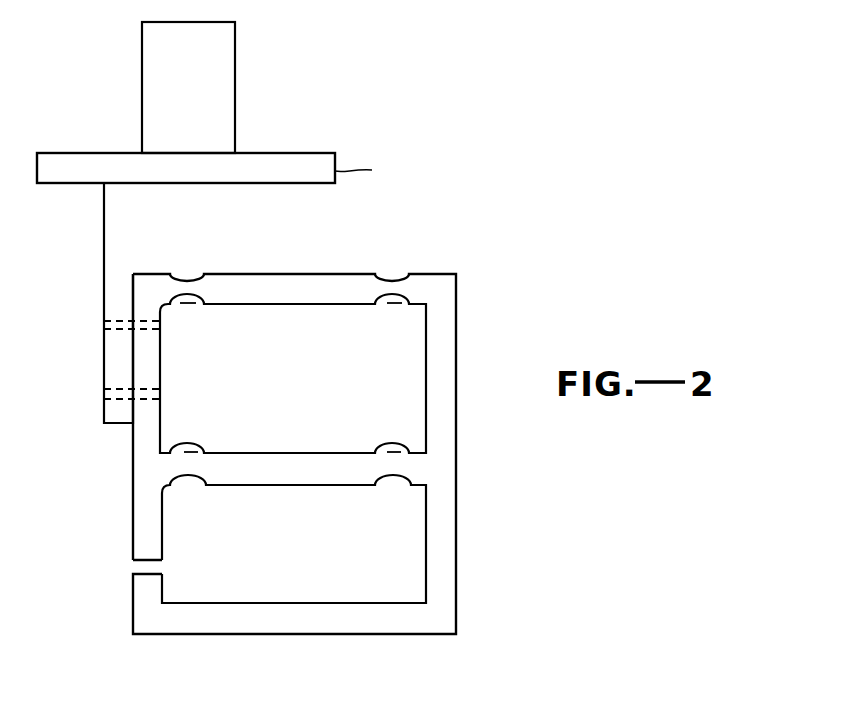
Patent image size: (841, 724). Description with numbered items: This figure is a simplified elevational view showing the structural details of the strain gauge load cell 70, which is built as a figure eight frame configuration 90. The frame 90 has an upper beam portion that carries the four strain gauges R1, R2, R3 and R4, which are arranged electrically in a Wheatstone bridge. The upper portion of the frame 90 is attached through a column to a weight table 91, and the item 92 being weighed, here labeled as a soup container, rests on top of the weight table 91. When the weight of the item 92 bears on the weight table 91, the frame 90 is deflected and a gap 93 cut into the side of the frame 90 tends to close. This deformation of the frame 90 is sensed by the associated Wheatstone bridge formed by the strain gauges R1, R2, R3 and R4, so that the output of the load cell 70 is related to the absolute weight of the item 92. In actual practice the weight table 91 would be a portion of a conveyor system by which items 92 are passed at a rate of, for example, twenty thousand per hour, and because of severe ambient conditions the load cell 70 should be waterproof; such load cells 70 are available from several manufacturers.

The item being weighed 92 is at (236, 88).
The weight table 91 is at (302, 181).
The figure eight frame configuration 90 is at (457, 517).
The gap 93 is at (132, 566).
The strain gauge load cell 70 is at (318, 396).
The strain gauge R1 is at (186, 316).
The strain gauge R2 is at (391, 316).
The strain gauge R3 is at (388, 440).
The strain gauge R4 is at (188, 440).